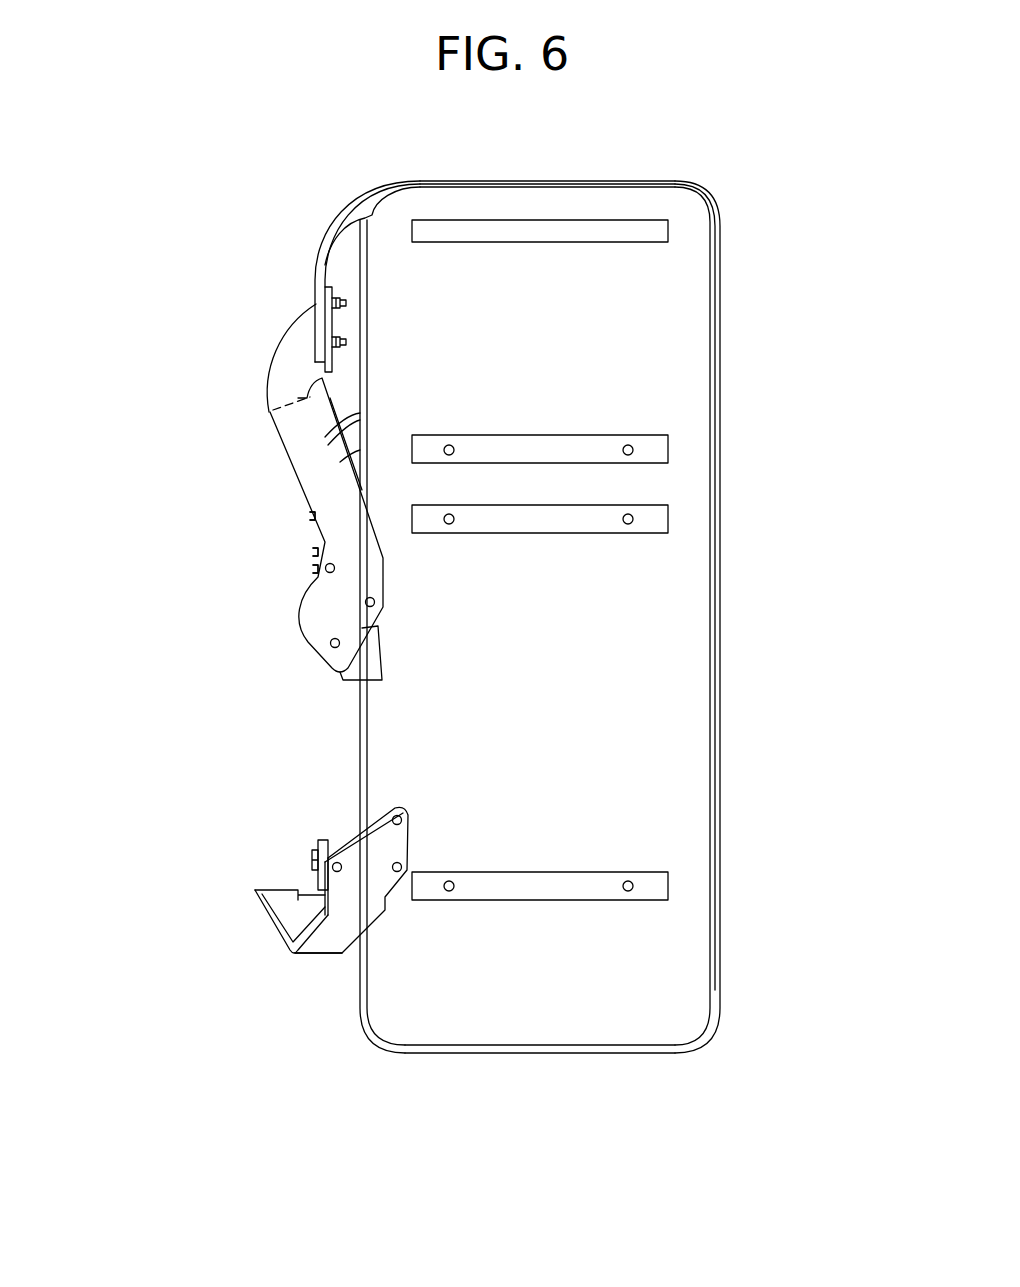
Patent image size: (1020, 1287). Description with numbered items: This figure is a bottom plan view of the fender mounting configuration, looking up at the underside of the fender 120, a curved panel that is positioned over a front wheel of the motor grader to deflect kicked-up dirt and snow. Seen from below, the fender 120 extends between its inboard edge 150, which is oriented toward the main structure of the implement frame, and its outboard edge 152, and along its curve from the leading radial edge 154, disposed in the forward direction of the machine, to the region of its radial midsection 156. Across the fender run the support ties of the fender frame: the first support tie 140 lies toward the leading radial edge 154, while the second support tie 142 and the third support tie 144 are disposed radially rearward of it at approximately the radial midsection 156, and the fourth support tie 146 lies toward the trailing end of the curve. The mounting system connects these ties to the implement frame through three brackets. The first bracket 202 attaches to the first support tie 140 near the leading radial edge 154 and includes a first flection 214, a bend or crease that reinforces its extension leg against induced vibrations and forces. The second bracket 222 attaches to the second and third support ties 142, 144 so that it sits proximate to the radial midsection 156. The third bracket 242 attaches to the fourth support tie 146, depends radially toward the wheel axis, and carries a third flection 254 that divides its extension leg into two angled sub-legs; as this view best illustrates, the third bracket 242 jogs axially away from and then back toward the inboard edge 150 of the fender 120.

The fender 120 is at (665, 330).
The first support tie 140 is at (312, 860).
The second support tie 142 is at (315, 545).
The third support tie 144 is at (348, 447).
The fourth support tie 146 is at (350, 202).
The inboard edge 150 is at (358, 768).
The outboard edge 152 is at (718, 650).
The leading radial edge 154 is at (565, 1050).
The radial midsection 156 is at (530, 183).
The first bracket 202 is at (293, 945).
The first flection 214 is at (315, 955).
The second bracket 222 is at (340, 677).
The third bracket 242 is at (277, 387).
The third flection 254 is at (273, 410).